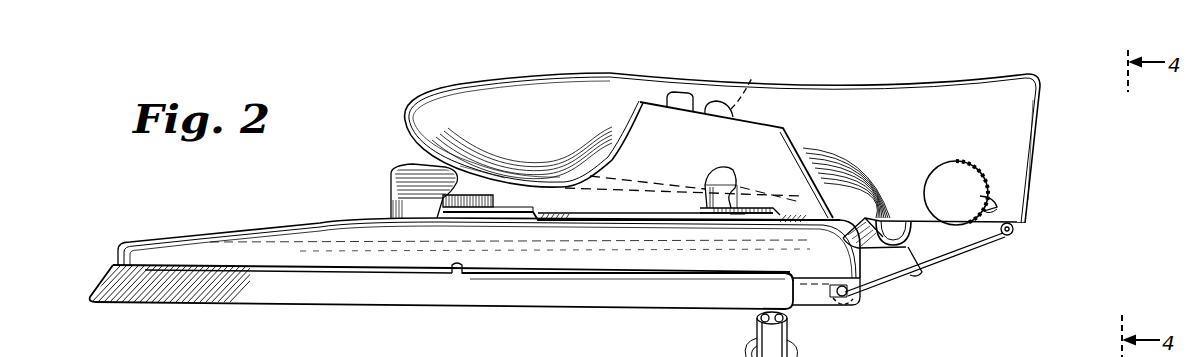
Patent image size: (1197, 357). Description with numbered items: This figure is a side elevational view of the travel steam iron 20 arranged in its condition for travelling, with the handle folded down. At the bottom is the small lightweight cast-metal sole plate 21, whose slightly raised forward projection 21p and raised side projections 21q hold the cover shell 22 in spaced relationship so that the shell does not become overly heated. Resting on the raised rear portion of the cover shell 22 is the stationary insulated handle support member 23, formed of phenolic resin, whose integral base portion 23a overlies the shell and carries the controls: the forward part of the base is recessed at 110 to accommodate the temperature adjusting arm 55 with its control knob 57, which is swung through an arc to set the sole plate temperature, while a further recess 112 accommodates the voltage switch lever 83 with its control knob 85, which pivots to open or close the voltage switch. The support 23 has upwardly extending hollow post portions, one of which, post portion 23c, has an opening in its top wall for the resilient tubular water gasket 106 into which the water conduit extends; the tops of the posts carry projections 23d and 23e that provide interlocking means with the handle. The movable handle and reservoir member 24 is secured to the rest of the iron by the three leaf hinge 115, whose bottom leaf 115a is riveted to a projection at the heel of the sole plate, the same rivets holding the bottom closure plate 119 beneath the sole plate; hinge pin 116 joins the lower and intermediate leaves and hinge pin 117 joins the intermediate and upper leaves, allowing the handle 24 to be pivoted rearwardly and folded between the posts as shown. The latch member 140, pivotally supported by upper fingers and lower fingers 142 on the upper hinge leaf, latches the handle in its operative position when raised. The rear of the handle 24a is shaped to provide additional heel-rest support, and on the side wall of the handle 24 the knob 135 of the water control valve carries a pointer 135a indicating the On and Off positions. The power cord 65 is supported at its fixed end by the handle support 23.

The travel steam iron 20 is at (497, 337).
The sole plate 21 is at (311, 297).
The raised forward projection 21p is at (133, 246).
The raised projections 21q is at (457, 275).
The cover shell 22 is at (338, 220).
The handle support member 23 is at (634, 127).
The base portion 23a is at (505, 193).
The post portion 23c is at (763, 137).
The projection 23d is at (746, 98).
The projection 23e is at (679, 93).
The movable handle and reservoir member 24 is at (866, 88).
The rear of the handle 24a is at (1037, 120).
The temperature adjusting arm 55 is at (496, 214).
The control knob 57 is at (409, 168).
The power cord 65 is at (758, 331).
The voltage switch lever 83 is at (736, 216).
The control knob 85 is at (735, 150).
The water gasket 106 is at (717, 102).
The recess 110 is at (473, 209).
The recess 112 is at (757, 208).
The three leaf hinge 115 is at (978, 258).
The bottom leaf 115a is at (848, 306).
The hinge pin 116 is at (860, 251).
The hinge pin 117 is at (1014, 235).
The bottom closure plate 119 is at (827, 304).
The knob 135 is at (946, 173).
The pointer 135a is at (999, 209).
The latch member 140 is at (917, 265).
The lower fingers 142 is at (913, 224).